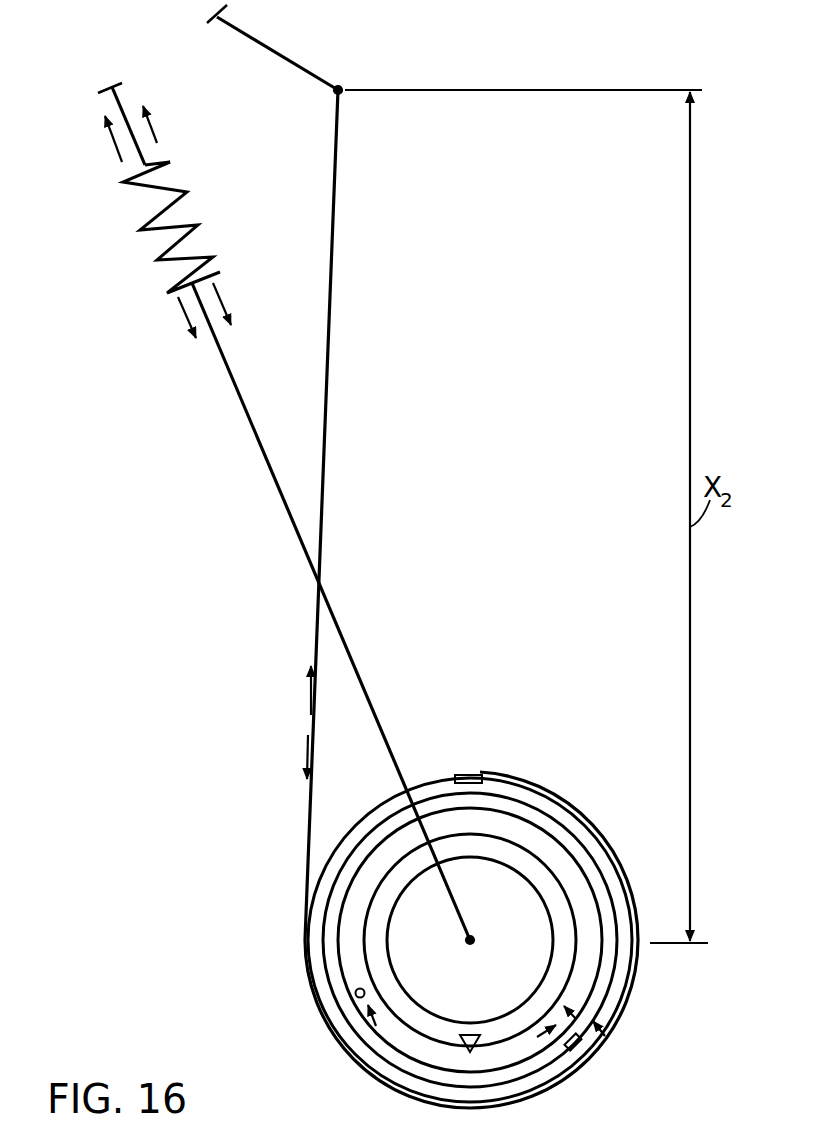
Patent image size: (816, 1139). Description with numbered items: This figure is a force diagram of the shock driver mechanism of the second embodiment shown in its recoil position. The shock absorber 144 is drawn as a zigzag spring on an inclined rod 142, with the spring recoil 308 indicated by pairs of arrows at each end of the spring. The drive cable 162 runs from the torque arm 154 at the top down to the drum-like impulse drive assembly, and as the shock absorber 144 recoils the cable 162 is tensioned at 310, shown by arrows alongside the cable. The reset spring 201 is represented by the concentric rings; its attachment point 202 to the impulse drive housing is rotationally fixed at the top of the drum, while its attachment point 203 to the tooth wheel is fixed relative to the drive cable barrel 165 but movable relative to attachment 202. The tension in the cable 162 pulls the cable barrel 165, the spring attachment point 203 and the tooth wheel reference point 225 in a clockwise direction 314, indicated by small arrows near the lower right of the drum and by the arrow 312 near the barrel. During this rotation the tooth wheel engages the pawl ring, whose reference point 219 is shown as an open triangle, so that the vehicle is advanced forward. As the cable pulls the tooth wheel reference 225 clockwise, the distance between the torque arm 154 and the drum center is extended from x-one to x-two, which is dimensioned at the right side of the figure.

The torque arm 154 is at (280, 55).
The drive cable 162 is at (333, 225).
The rod 142 is at (253, 437).
The shock absorber 144 is at (146, 268).
The spring recoil 308 is at (150, 125).
The cable tension 310 is at (306, 700).
The reset spring 201 is at (388, 812).
The attachment point of the reset spring to the impulse drive housing 202 is at (468, 797).
The attachment point of the reset spring to the tooth wheel 203 is at (579, 1049).
The pawl ring reference point 219 is at (470, 1033).
The tooth wheel reference point 225 is at (528, 1030).
The drive cable barrel 165 is at (355, 992).
The rotation arrow 312 is at (373, 1025).
The clockwise direction 314 is at (577, 993).